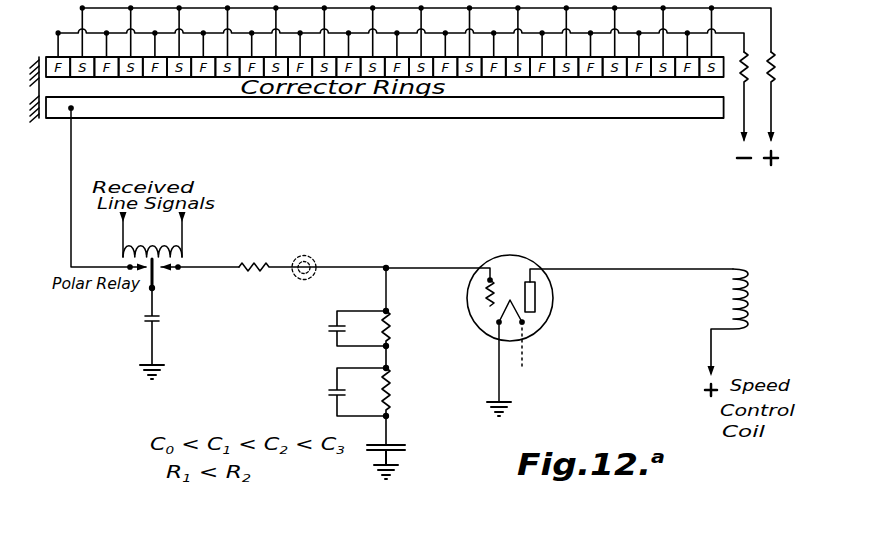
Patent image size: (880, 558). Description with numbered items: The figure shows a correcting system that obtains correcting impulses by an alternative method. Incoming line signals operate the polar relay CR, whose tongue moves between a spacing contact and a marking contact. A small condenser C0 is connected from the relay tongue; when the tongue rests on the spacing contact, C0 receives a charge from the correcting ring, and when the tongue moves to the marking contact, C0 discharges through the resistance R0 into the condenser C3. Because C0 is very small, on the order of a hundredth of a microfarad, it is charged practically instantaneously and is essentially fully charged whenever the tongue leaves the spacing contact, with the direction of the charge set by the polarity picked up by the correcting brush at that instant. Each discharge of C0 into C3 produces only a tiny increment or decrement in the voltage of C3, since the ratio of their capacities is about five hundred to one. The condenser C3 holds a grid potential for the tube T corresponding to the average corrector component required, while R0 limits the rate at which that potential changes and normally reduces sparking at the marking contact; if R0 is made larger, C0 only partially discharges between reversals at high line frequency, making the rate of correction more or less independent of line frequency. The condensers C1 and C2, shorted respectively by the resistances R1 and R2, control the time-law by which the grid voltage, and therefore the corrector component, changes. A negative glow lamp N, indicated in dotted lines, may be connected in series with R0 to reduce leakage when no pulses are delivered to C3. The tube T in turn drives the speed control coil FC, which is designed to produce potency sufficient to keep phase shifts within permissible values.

The polar relay CR is at (153, 250).
The small condenser C0 is at (140, 333).
The resistance R0 is at (312, 256).
The negative glow lamp N is at (311, 262).
The resistance R1 is at (400, 339).
The condenser C1 is at (341, 328).
The resistance R2 is at (400, 406).
The condenser C2 is at (341, 392).
The condenser C3 is at (398, 459).
The vacuum tube T is at (545, 318).
The speed control coil FC is at (748, 300).